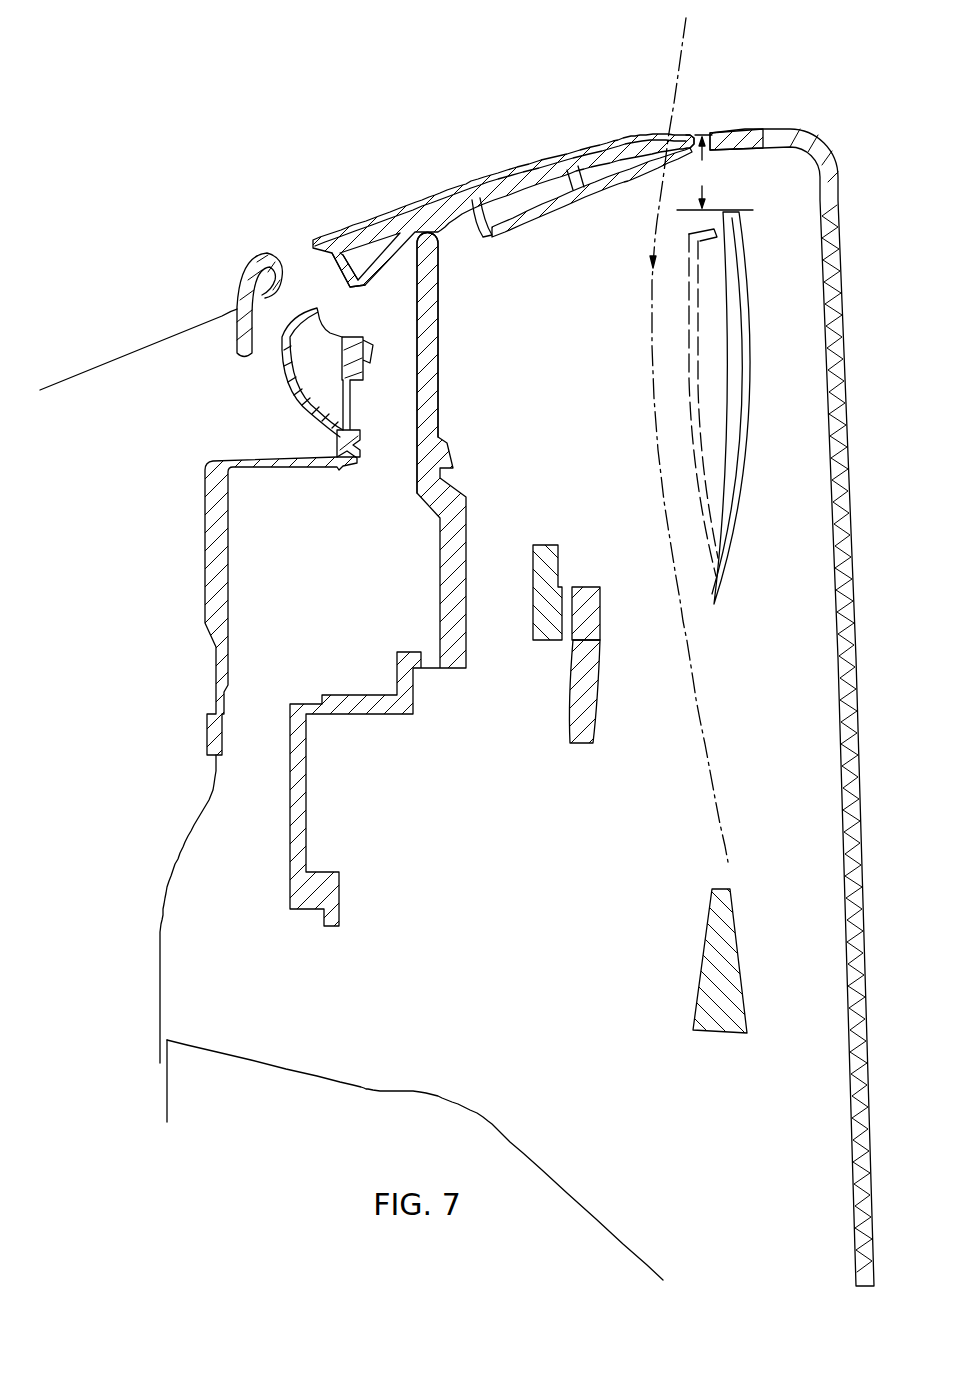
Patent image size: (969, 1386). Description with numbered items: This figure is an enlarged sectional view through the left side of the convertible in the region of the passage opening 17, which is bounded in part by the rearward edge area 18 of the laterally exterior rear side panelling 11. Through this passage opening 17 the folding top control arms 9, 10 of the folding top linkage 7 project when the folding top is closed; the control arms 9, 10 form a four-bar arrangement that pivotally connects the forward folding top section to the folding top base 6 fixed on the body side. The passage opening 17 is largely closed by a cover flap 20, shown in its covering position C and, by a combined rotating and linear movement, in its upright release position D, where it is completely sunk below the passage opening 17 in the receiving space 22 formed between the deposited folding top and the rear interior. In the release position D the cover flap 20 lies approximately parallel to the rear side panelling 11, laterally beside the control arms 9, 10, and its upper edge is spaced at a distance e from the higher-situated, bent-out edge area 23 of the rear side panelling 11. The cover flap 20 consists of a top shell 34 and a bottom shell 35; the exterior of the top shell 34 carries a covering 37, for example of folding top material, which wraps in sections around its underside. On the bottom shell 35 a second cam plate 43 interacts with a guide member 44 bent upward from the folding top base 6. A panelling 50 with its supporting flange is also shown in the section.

The folding top base 6 is at (377, 724).
The folding top linkage 7 is at (563, 657).
The folding top control arm 9 is at (557, 552).
The folding top control arm 10 is at (587, 619).
The rear side panelling 11 is at (848, 554).
The passage opening 17 is at (691, 119).
The rearward edge area 18 is at (713, 133).
The cover flap 20 is at (445, 183).
The receiving space 22 is at (741, 822).
The bent-out edge area 23 is at (743, 123).
The top shell 34 is at (588, 151).
The bottom shell 35 is at (563, 194).
The covering 37 is at (382, 217).
The second cam plate 43 is at (456, 228).
The guide member 44 is at (410, 247).
The panelling 50 is at (221, 627).
The covering position C is at (503, 160).
The release position D is at (752, 334).
The distance e is at (715, 172).